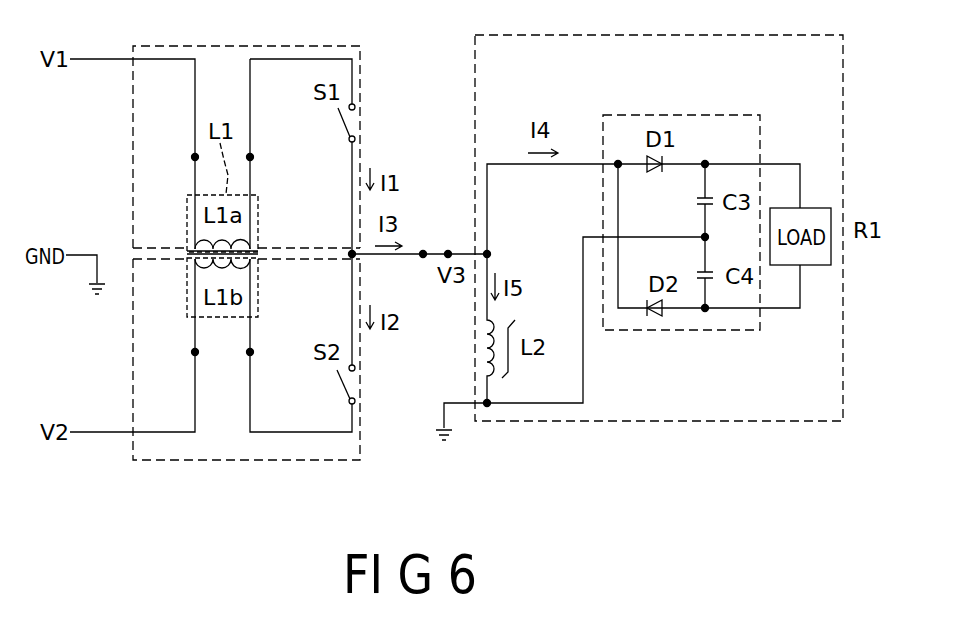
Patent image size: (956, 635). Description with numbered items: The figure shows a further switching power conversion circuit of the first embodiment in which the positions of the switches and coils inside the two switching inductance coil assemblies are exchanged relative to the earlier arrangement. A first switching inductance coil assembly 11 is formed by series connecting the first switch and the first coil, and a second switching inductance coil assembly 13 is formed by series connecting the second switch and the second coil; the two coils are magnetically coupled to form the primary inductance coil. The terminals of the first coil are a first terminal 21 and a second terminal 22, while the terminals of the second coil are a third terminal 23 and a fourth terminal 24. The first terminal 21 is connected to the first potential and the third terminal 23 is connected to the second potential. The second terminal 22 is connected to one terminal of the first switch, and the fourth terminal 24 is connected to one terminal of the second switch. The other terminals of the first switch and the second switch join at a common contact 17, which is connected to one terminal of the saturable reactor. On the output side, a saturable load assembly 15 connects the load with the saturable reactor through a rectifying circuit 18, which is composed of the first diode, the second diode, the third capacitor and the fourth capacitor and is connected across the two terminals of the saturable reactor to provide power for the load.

The first switching inductance coil assembly 11 is at (222, 44).
The second switching inductance coil assembly 13 is at (220, 461).
The saturable load assembly 15 is at (708, 413).
The common contact 17 is at (423, 252).
The rectifying circuit 18 is at (700, 114).
The first terminal 21 is at (194, 157).
The second terminal 22 is at (251, 157).
The third terminal 23 is at (194, 352).
The fourth terminal 24 is at (251, 352).